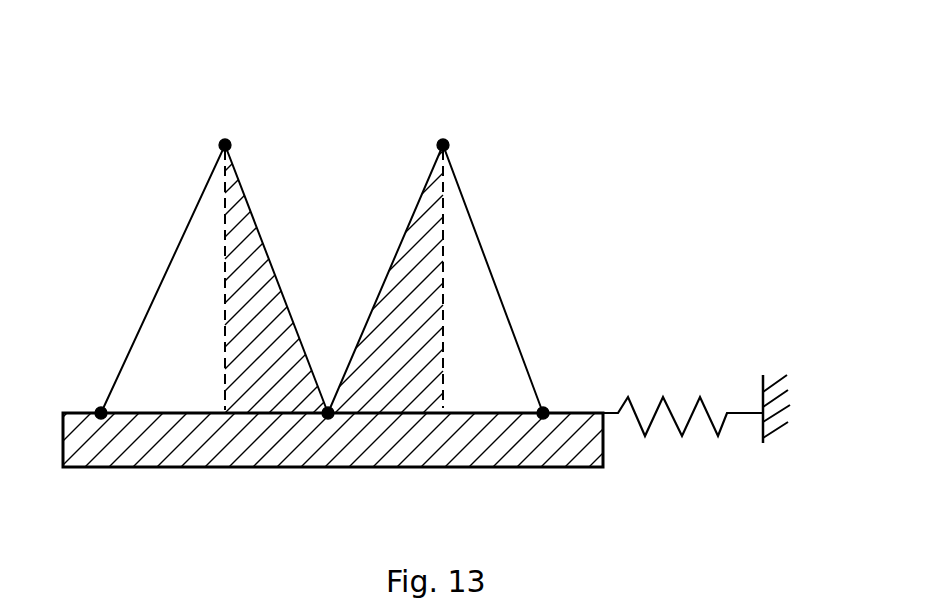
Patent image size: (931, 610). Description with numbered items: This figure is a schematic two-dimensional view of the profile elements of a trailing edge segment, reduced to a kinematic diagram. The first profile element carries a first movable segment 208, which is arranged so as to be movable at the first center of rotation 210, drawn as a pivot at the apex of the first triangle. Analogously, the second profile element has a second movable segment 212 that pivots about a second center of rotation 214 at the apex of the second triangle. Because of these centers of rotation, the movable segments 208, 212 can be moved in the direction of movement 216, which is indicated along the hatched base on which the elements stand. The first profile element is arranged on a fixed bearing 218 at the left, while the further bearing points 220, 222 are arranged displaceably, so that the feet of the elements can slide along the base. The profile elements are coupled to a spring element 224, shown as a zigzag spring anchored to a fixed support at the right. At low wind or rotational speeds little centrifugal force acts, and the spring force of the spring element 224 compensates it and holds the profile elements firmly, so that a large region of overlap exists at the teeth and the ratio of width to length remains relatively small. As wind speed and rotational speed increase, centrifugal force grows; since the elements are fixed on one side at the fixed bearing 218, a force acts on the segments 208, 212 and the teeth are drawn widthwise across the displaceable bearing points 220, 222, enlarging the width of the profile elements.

The first movable segment 208 is at (262, 295).
The first center of rotation 210 is at (226, 138).
The second movable segment 212 is at (430, 288).
The second center of rotation 214 is at (443, 138).
The direction of movement 216 is at (333, 440).
The fixed bearing 218 is at (101, 415).
The bearing point 220 is at (328, 415).
The bearing point 222 is at (543, 415).
The spring element 224 is at (718, 436).